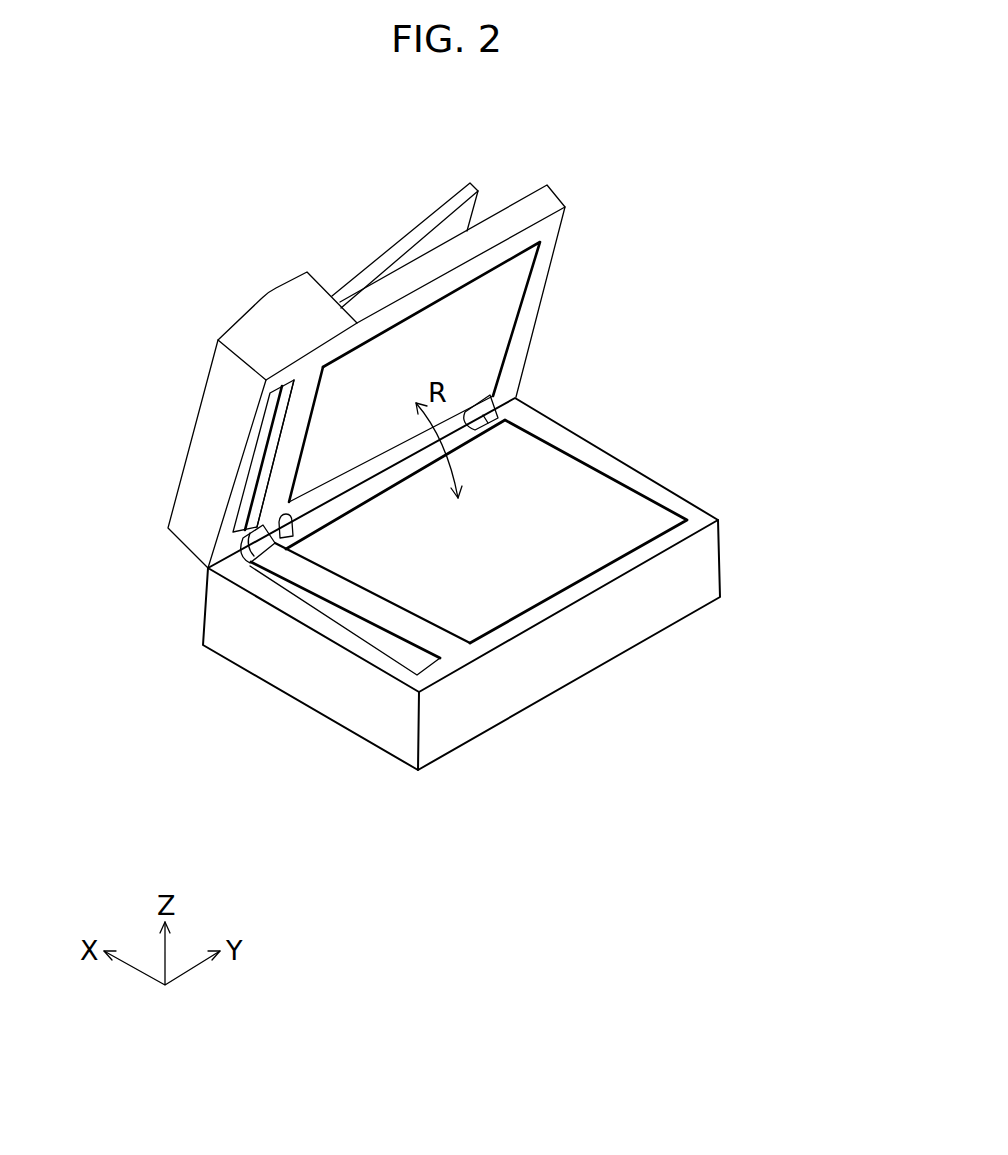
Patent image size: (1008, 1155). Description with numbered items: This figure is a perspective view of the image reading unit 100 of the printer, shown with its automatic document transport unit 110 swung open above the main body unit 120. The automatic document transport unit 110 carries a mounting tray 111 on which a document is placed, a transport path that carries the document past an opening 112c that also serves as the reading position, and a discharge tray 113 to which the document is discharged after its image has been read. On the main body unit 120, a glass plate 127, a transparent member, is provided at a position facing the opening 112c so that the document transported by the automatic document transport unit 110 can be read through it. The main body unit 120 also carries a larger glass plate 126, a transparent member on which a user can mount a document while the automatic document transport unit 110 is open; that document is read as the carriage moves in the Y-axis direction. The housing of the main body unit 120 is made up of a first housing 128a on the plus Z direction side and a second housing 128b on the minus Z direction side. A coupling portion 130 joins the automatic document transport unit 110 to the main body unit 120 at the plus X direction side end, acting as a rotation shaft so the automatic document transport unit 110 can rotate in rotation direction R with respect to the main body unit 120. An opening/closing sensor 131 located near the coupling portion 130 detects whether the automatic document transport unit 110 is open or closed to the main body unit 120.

The image reading unit 100 is at (716, 222).
The automatic document transport unit 110 is at (265, 295).
The mounting tray 111 is at (407, 233).
The opening 112c is at (265, 456).
The discharge tray 113 is at (490, 212).
The main body unit 120 is at (676, 623).
The glass plate 126 is at (550, 488).
The glass plate 127 is at (363, 628).
The first housing 128a is at (700, 523).
The second housing 128b is at (253, 653).
The coupling portion 130 is at (507, 433).
The opening/closing sensor 131 is at (287, 517).